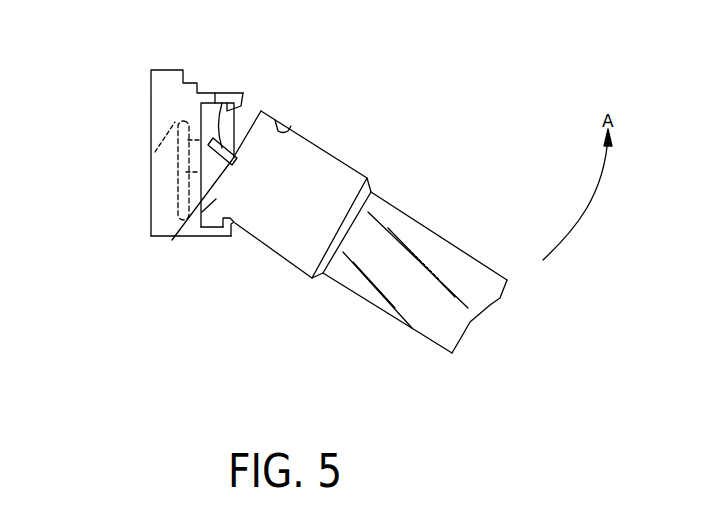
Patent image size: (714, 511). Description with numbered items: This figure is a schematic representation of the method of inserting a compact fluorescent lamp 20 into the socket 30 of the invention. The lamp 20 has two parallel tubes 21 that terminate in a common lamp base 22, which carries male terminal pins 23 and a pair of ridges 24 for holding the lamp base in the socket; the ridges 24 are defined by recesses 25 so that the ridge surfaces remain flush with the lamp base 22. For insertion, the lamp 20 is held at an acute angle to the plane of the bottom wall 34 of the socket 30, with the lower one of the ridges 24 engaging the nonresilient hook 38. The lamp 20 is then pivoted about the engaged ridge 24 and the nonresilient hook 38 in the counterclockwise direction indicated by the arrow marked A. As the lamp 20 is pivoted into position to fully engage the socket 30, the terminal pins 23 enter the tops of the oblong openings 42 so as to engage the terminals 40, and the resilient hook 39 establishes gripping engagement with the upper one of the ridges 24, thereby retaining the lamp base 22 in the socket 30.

The compact fluorescent lamp 20 is at (350, 305).
The parallel tubes 21 is at (418, 238).
The lamp base 22 is at (322, 165).
The male terminal pins 23 is at (230, 110).
The ridges 24 is at (264, 122).
The recesses 25 is at (290, 122).
The socket 30 is at (146, 197).
The bottom wall 34 is at (212, 233).
The nonresilient hook 38 is at (230, 230).
The resilient hook 39 is at (232, 103).
The terminals 40 is at (172, 169).
The oblong openings 42 is at (188, 152).